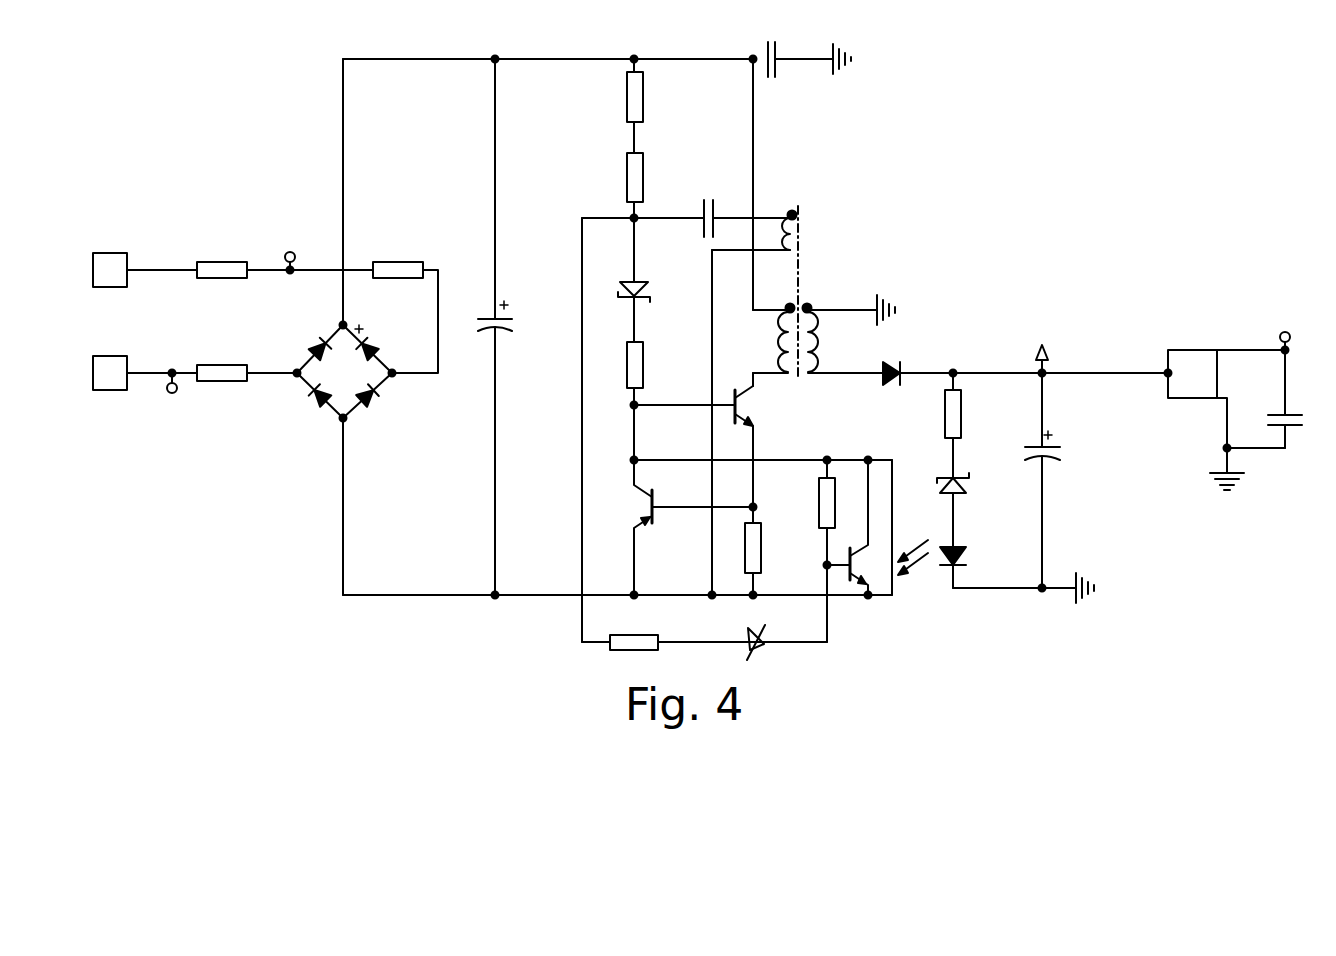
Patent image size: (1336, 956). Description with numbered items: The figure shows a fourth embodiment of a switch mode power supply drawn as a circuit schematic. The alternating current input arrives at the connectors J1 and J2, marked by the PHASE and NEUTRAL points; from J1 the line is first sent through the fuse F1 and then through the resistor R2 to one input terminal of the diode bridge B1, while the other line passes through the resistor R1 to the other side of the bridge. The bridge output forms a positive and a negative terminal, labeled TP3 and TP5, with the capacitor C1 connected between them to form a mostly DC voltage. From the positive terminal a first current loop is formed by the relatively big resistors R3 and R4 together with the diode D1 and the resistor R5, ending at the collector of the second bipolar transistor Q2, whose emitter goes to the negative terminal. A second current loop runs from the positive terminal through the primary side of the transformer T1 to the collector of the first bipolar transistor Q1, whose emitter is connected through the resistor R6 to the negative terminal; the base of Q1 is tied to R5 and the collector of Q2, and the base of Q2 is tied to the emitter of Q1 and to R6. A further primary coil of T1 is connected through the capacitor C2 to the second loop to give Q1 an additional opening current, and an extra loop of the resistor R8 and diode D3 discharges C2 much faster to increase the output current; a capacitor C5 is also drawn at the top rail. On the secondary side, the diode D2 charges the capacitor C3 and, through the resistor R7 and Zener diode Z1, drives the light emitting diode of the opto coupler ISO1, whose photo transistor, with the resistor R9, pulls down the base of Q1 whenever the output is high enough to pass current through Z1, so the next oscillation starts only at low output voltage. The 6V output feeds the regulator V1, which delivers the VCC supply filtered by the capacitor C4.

The input connector J1 is at (145, 257).
The input connector J2 is at (145, 361).
The fuse F1 is at (285, 256).
The resistor R1 is at (247, 360).
The resistor R2 is at (405, 304).
The phase test point PHASE is at (298, 251).
The neutral test point NEUTRAL is at (206, 395).
The bridge rectifier B1 is at (347, 371).
The capacitor C1 is at (510, 327).
The test point 3 TP3 is at (550, 50).
The test point 5 TP5 is at (617, 584).
The resistor R3 is at (649, 106).
The resistor R4 is at (649, 217).
The resistor R5 is at (649, 403).
The diode D1 is at (650, 311).
The capacitor C2 is at (707, 208).
The capacitor C5 is at (805, 46).
The transformer T1 is at (836, 277).
The first bipolar transistor Q1 is at (705, 423).
The second bipolar transistor Q2 is at (682, 527).
The resistor R6 is at (763, 526).
The resistor R9 is at (841, 551).
The resistor R8 is at (704, 631).
The diode D3 is at (756, 645).
The diode D2 is at (890, 360).
The resistor R7 is at (967, 425).
The Zener diode Z1 is at (968, 484).
The opto coupler ISO1 is at (960, 531).
The 6V supply node 6V is at (1044, 347).
The capacitor C3 is at (1057, 480).
The voltage regulator V1 is at (1217, 407).
The VCC supply node VCC is at (1285, 331).
The capacitor C4 is at (1279, 399).